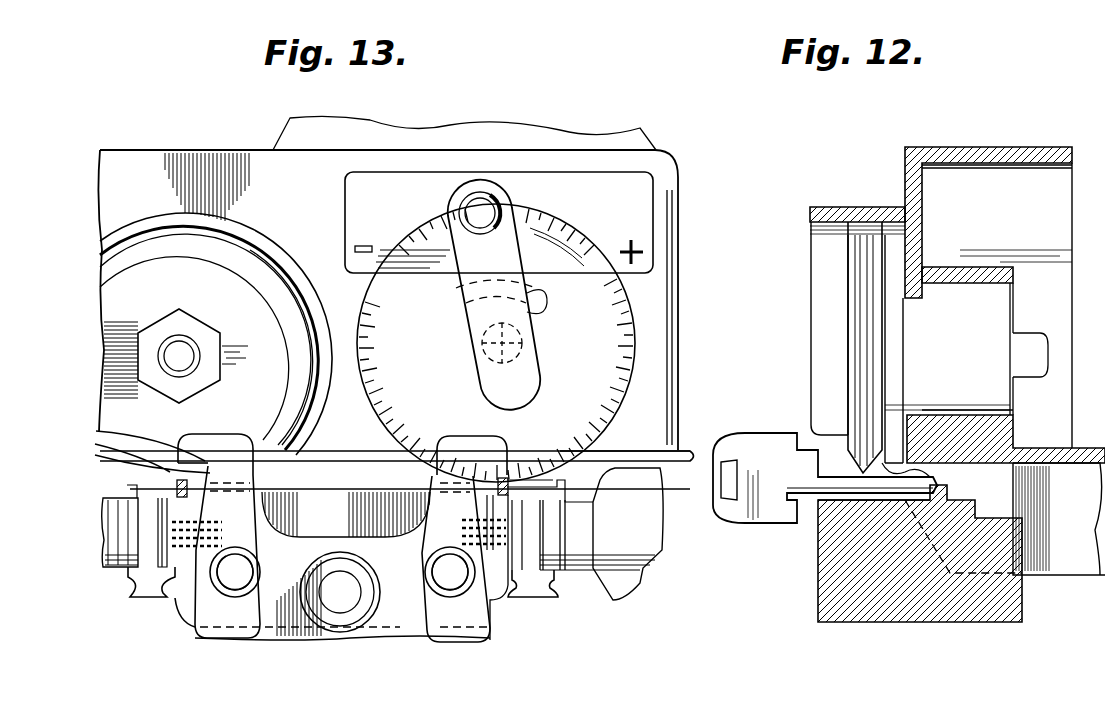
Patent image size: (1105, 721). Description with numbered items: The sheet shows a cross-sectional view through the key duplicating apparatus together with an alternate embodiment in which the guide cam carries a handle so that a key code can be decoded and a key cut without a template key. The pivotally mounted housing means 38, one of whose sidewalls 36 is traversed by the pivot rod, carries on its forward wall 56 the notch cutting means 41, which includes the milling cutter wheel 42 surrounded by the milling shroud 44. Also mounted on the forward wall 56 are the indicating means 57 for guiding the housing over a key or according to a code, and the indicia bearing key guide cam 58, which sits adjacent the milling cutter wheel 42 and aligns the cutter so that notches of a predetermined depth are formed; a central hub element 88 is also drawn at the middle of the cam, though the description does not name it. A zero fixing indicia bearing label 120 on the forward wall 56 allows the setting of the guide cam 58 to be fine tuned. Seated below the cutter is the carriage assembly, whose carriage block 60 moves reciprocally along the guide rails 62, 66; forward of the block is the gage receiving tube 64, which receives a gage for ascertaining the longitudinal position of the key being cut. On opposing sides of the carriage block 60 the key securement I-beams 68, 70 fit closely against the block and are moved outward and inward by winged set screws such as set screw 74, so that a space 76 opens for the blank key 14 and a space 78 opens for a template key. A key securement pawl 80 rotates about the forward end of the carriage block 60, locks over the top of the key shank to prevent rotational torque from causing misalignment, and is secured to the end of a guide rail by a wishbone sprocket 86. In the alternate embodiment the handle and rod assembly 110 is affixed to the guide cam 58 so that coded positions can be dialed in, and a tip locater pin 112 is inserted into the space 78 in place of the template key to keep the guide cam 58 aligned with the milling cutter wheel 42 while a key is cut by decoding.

In FIG. 13, the blank key 14 is at (180, 460).
In FIG. 12, the blank key 14 is at (772, 507).
In FIG. 12, the sidewall 36 is at (1088, 530).
In FIG. 13, the pivotally mounted housing means 38 is at (690, 450).
In FIG. 12, the pivotally mounted housing means 38 is at (1040, 448).
In FIG. 13, the notch cutting means 41 is at (122, 200).
In FIG. 12, the notch cutting means 41 is at (795, 180).
In FIG. 13, the milling cutter wheel 42 is at (140, 312).
In FIG. 12, the milling cutter wheel 42 is at (878, 270).
In FIG. 13, the milling shroud 44 is at (178, 215).
In FIG. 12, the milling shroud 44 is at (855, 212).
In FIG. 13, the forward wall 56 is at (258, 165).
In FIG. 12, the forward wall 56 is at (905, 155).
In FIG. 13, the indicating means 57 is at (650, 336).
In FIG. 13, the indicia bearing key guide cam 58 is at (620, 298).
In FIG. 13, the carriage block 60 is at (345, 490).
In FIG. 12, the carriage block 60 is at (950, 605).
In FIG. 13, the guide rail 62 is at (235, 580).
In FIG. 13, the gage receiving tube 64 is at (350, 615).
In FIG. 13, the guide rail 66 is at (450, 585).
In FIG. 13, the key securement I-beam 68 is at (528, 597).
In FIG. 13, the key securement I-beam 70 is at (150, 590).
In FIG. 13, the winged set screw 74 is at (620, 590).
In FIG. 13, the space 76 is at (175, 490).
In FIG. 12, the space 76 is at (847, 502).
In FIG. 13, the space 78 is at (507, 487).
In FIG. 13, the key securement pawl 80 is at (225, 440).
In FIG. 13, the wishbone sprocket 86 is at (470, 440).
In FIG. 13, the center hub 88 is at (480, 342).
In FIG. 13, the handle and rod assembly 110 is at (478, 190).
In FIG. 13, the tip locater pin 112 is at (580, 454).
In FIG. 13, the zero fixing indicia bearing label 120 is at (600, 190).